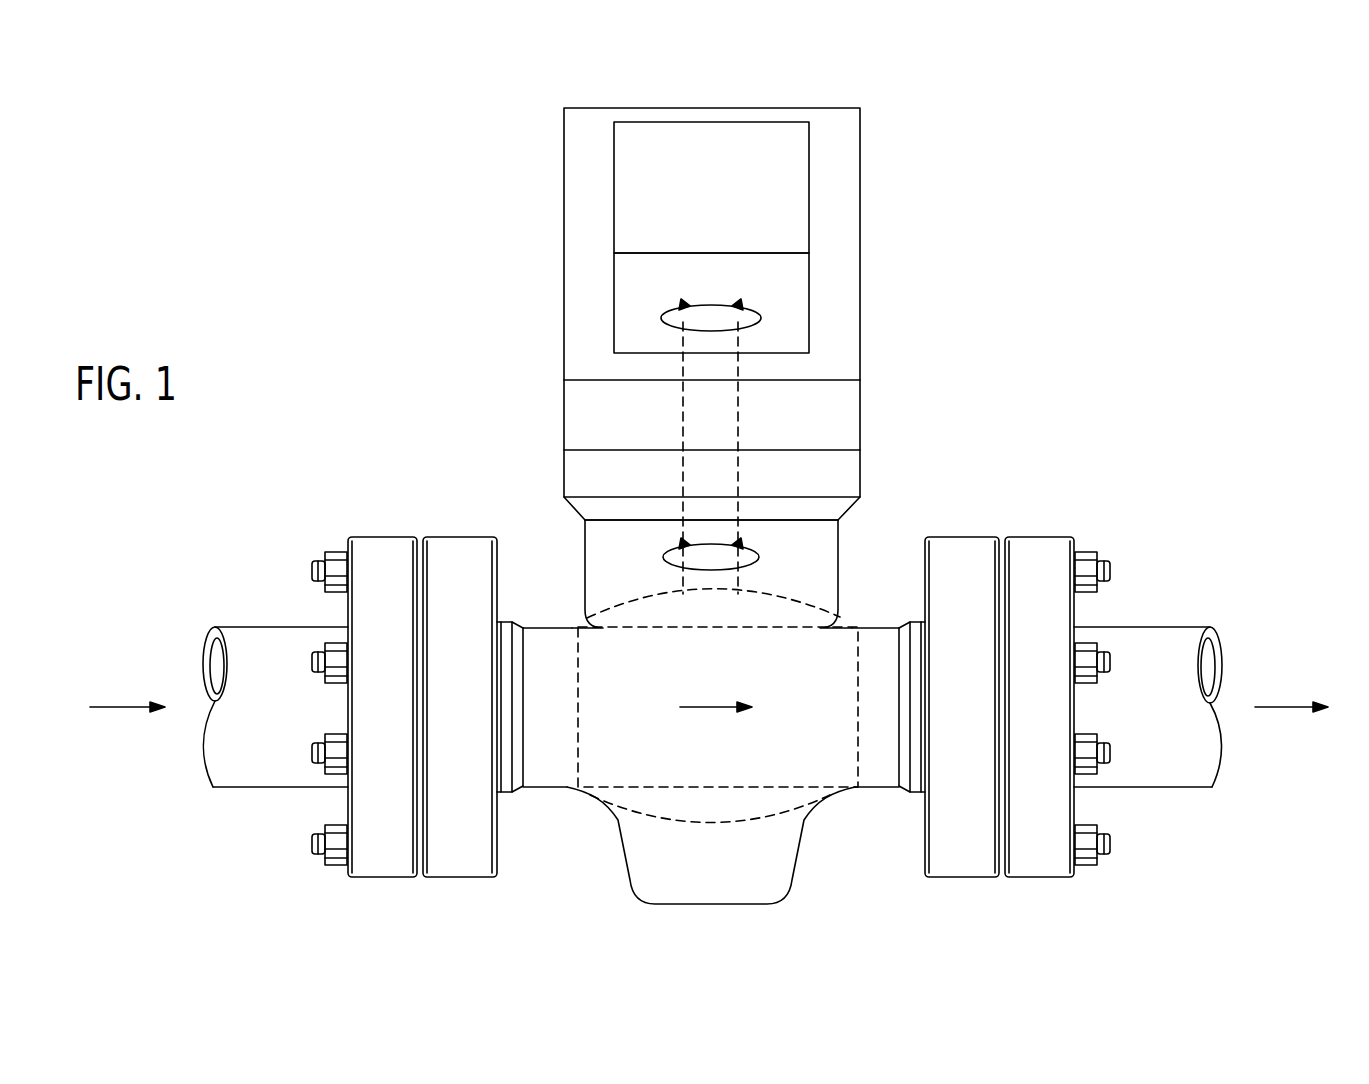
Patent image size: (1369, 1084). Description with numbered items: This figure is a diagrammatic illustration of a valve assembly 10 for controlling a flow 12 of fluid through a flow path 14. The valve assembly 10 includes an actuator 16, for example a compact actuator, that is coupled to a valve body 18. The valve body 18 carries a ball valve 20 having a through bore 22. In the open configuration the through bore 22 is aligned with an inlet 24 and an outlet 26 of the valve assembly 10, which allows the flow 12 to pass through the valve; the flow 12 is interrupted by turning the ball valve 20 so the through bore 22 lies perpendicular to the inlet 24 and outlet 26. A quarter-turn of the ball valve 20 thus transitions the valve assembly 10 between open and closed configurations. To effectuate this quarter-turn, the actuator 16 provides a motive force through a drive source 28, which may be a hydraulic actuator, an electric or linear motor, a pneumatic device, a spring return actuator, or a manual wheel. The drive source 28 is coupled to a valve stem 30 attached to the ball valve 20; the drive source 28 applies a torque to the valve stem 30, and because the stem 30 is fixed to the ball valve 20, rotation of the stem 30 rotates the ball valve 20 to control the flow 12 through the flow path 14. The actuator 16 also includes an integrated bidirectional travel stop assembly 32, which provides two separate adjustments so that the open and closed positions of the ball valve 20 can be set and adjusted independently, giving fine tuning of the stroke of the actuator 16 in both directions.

The valve assembly 10 is at (1065, 323).
The flow 12 is at (121, 707).
The flow path 14 is at (203, 665).
The actuator 16 is at (860, 262).
The valve body 18 is at (838, 562).
The ball valve 20 is at (652, 815).
The through bore 22 is at (805, 747).
The inlet 24 is at (460, 537).
The outlet 26 is at (963, 537).
The drive source 28 is at (809, 302).
The valve stem 30 is at (683, 408).
The integrated bidirectional travel stop assembly 32 is at (809, 166).